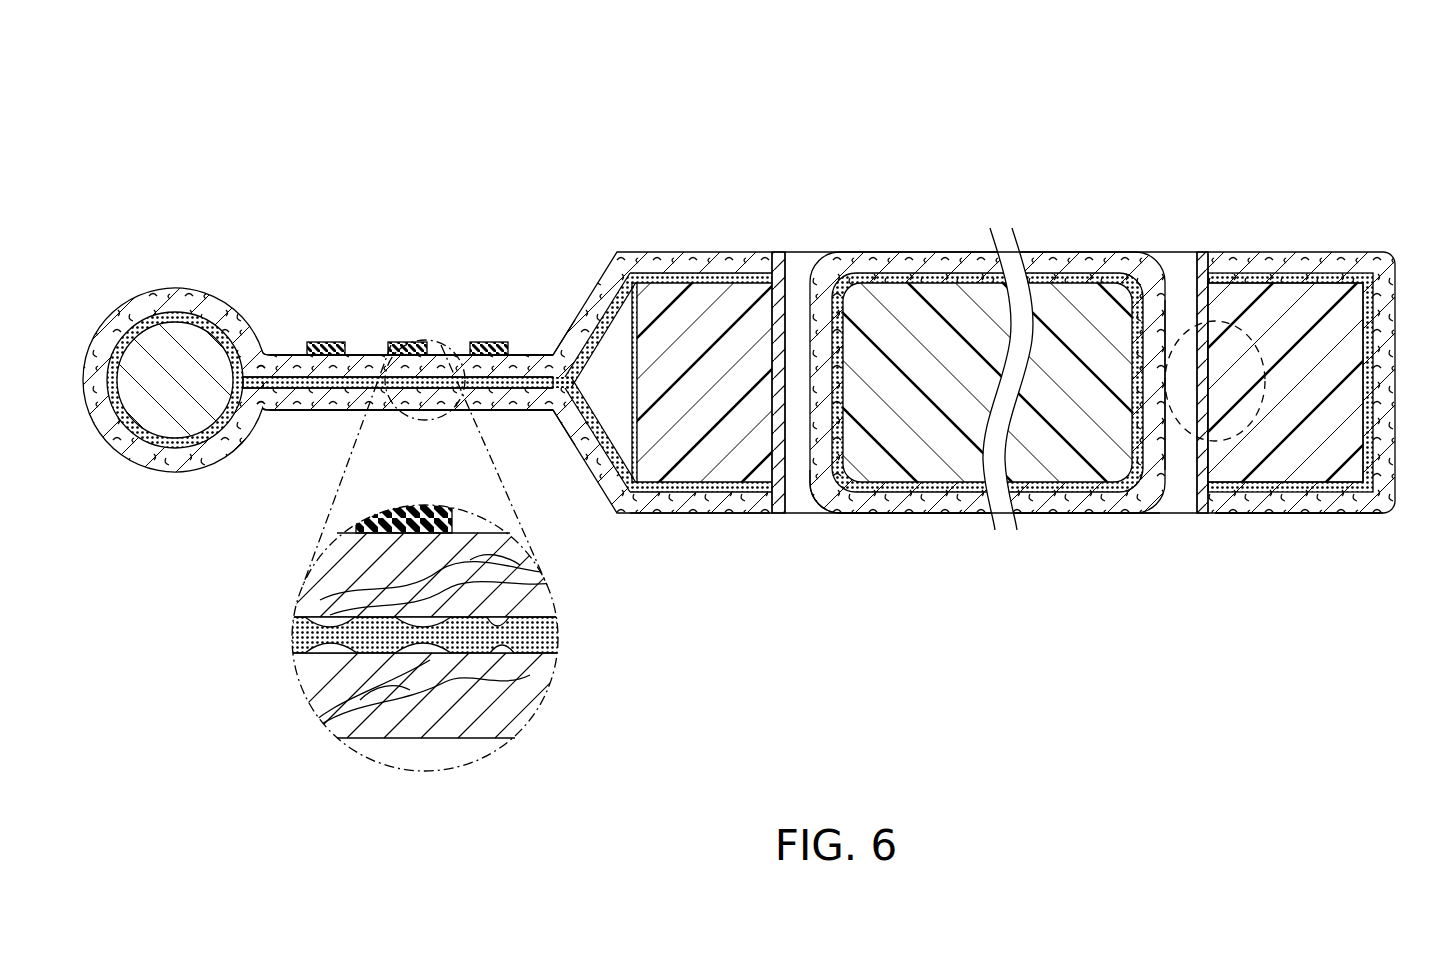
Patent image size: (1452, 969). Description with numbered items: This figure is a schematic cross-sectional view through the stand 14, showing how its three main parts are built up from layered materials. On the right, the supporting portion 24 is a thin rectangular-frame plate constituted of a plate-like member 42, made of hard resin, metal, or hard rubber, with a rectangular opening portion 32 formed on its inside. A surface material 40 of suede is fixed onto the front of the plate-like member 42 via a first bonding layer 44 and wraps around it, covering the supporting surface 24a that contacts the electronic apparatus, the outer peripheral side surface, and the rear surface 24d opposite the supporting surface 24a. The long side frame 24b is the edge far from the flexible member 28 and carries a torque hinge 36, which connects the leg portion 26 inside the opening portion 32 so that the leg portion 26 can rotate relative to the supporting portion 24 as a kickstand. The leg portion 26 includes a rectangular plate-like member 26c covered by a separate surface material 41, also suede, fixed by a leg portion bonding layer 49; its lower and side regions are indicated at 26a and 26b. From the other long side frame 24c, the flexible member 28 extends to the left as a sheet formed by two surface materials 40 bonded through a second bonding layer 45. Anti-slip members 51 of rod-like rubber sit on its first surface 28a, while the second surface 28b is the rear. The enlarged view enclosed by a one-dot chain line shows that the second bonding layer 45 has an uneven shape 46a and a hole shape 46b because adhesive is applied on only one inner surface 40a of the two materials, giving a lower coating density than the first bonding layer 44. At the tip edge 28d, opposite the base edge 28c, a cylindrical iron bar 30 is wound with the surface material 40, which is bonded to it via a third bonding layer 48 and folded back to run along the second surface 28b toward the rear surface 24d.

The stand 14 is at (181, 106).
The supporting portion 24 is at (1333, 240).
The supporting surface 24a is at (1250, 253).
The long side frame 24b is at (1299, 342).
The long side frame 24c is at (713, 513).
The rear surface 24d is at (1233, 515).
The leg portion 26 is at (905, 247).
The lower surface of middle block 26a is at (808, 455).
The side wall of middle block 26b is at (1155, 310).
The plate-like member 26c is at (1058, 300).
The flexible member 28 is at (323, 426).
The first surface 28a is at (363, 355).
The second surface 28b is at (510, 410).
The base edge 28c is at (553, 355).
The tip edge 28d is at (268, 352).
The bar 30 is at (170, 427).
The opening portion 32 is at (1178, 502).
The torque hinge 36 is at (1250, 430).
The surface material 40 is at (675, 265).
The inner surface 40a is at (468, 378).
The surface material 41 is at (955, 513).
The plate-like member 42 is at (1340, 355).
The first bonding layer 44 is at (718, 274).
The second bonding layer 45 is at (440, 388).
The uneven shape 46a is at (545, 600).
The hole shape 46b is at (540, 660).
The third bonding layer 48 is at (145, 440).
The leg portion bonding layer 49 is at (1080, 485).
The anti-slip member 51 is at (320, 342).